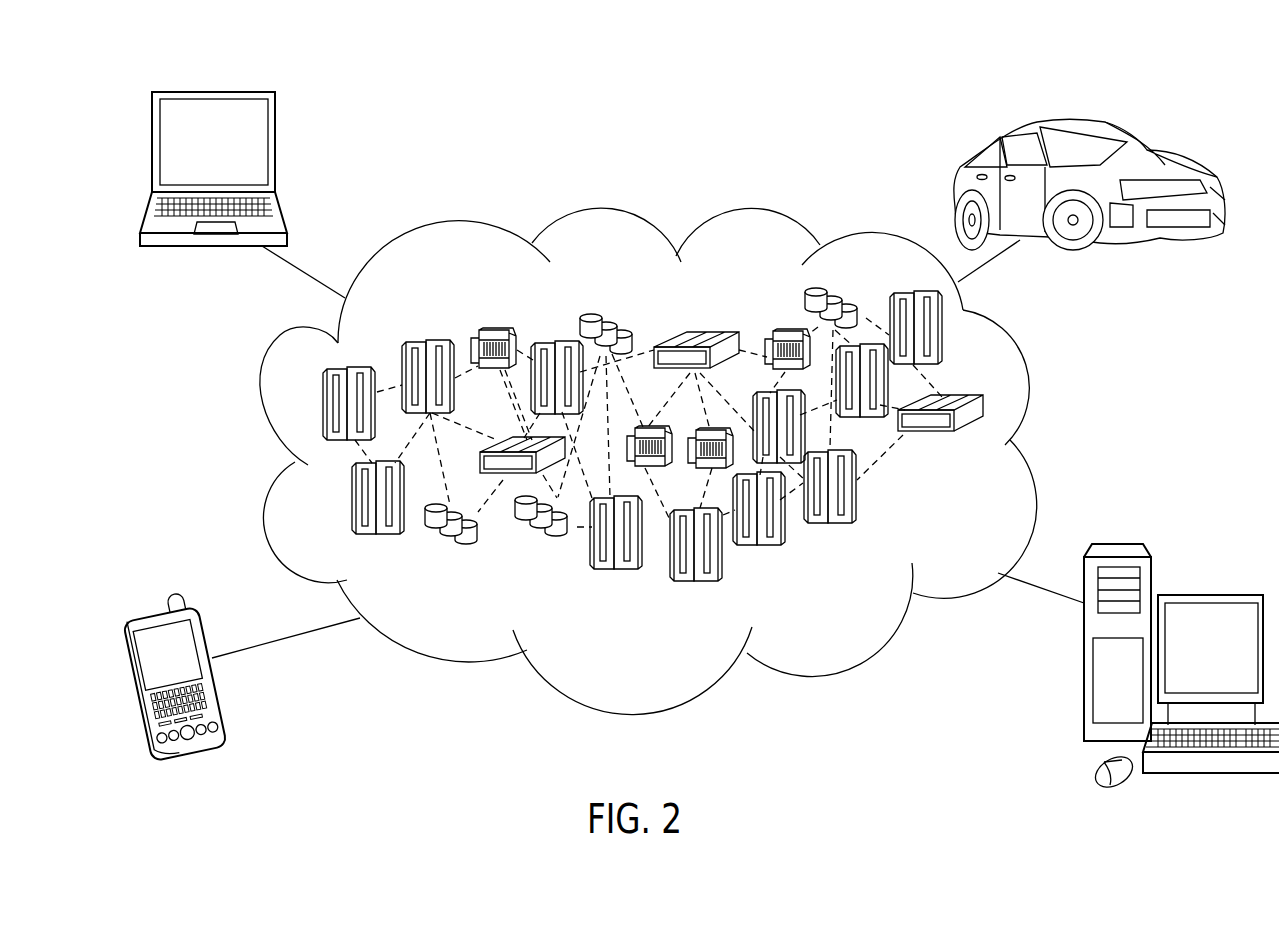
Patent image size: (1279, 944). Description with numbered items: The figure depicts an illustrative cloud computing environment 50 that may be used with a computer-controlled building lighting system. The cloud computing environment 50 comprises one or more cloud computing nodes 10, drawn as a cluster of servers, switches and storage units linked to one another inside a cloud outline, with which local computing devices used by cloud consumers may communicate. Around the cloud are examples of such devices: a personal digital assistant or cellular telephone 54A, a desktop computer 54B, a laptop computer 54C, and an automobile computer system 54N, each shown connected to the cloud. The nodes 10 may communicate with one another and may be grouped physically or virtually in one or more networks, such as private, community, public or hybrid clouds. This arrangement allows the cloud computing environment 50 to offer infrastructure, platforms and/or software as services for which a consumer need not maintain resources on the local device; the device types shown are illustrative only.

The cloud computing node 10 is at (1008, 461).
The cloud computing environment 50 is at (1025, 375).
The personal digital assistant or cellular telephone 54A is at (130, 685).
The desktop computer 54B is at (1210, 595).
The laptop computer 54C is at (152, 148).
The automobile computer system 54N is at (1140, 142).